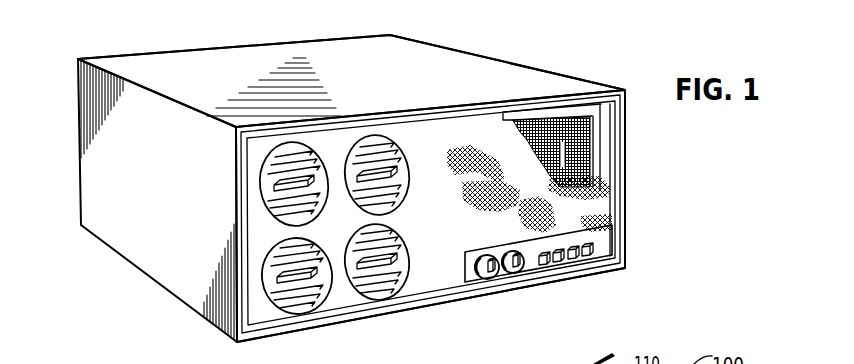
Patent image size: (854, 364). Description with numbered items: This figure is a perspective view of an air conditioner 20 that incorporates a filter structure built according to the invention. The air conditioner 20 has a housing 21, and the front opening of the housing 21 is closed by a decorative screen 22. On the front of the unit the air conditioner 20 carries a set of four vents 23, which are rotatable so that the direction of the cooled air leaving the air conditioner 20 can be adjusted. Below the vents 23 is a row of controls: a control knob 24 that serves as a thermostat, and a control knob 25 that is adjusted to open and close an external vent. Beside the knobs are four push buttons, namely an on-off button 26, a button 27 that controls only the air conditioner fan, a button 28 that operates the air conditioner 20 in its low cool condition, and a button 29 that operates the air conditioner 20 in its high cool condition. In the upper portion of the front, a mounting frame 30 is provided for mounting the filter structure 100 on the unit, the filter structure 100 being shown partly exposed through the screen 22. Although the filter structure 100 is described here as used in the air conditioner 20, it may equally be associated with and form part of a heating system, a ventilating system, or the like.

The air conditioner 20 is at (577, 32).
The housing 21 is at (441, 60).
The decorative screen 22 is at (445, 283).
The vents 23 is at (367, 293).
The control knob 24 is at (489, 279).
The control knob 25 is at (517, 273).
The on-off button 26 is at (545, 266).
The button 27 is at (559, 263).
The button 28 is at (575, 259).
The button 29 is at (590, 257).
The mounting frame 30 is at (601, 138).
The filter structure 100 is at (588, 116).